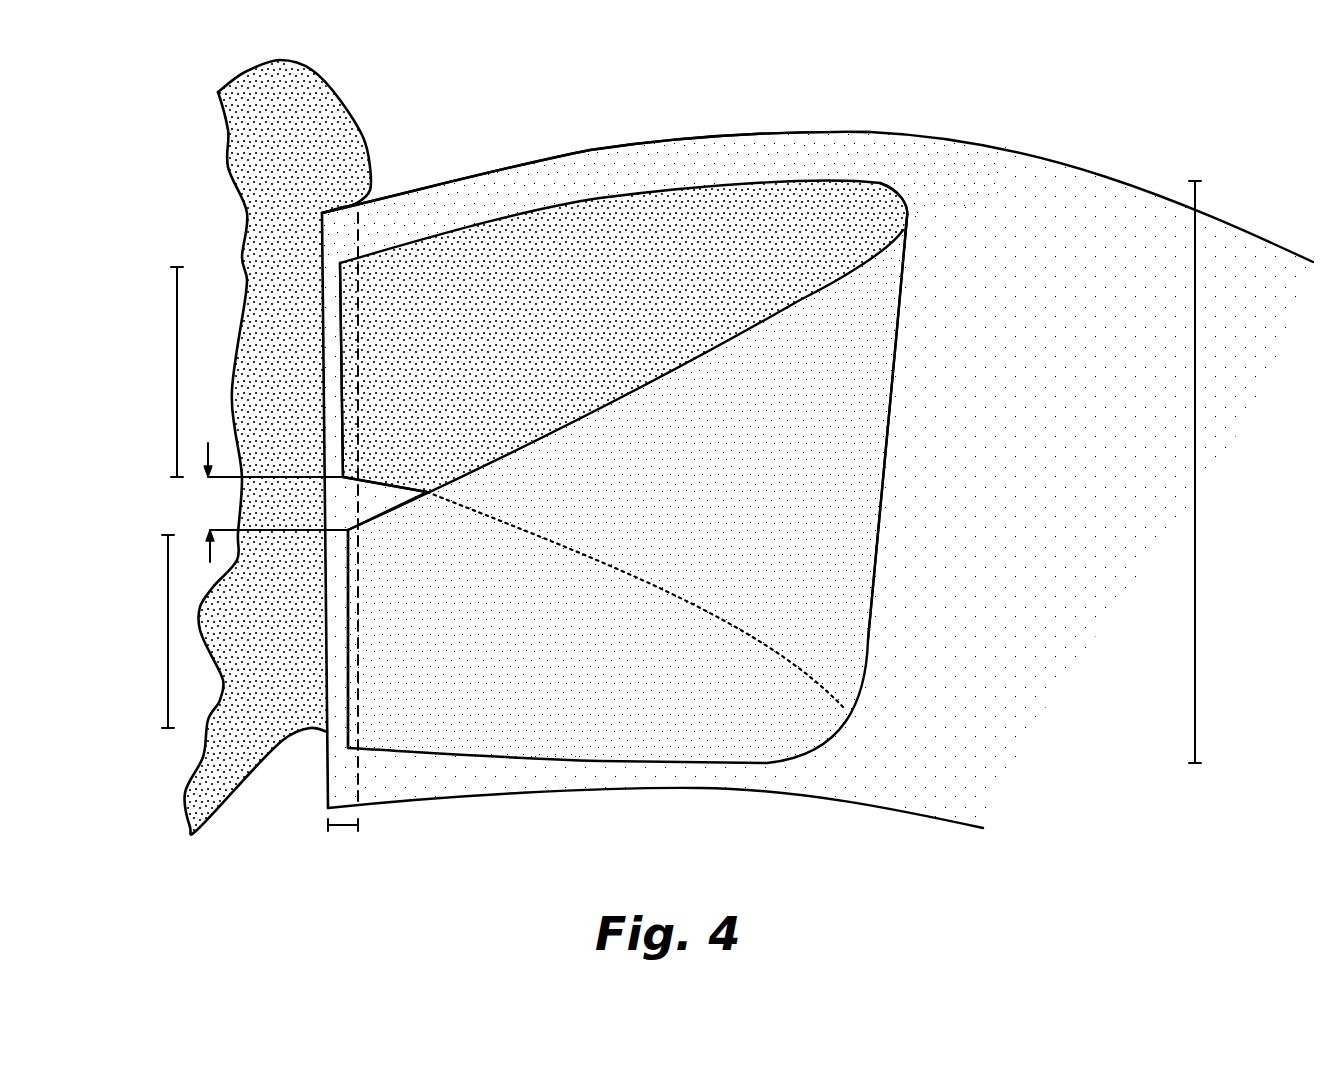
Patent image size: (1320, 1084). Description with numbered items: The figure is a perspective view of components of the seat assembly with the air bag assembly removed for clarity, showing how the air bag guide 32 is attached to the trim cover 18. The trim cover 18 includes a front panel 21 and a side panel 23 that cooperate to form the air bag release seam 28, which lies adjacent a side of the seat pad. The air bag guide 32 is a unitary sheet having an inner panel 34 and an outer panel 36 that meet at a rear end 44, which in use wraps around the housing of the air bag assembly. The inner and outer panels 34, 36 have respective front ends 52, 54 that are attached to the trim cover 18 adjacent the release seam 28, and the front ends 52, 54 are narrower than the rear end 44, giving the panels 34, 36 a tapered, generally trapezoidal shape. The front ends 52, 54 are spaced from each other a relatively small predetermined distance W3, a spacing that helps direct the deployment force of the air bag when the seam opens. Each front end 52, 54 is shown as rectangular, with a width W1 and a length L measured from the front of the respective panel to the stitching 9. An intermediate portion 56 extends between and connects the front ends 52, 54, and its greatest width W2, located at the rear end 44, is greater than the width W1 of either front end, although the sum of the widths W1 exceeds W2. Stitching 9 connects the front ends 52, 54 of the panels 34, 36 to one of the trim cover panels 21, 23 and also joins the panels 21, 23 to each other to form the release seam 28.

The trim cover 18 is at (821, 128).
The front panel 21 is at (573, 163).
The side panel 23 is at (333, 110).
The air bag release seam 28 is at (380, 176).
The air bag guide 32 is at (880, 468).
The inner panel 34 is at (628, 317).
The outer panel 36 is at (683, 551).
The rear end 44 is at (887, 398).
The intermediate portion 56 is at (880, 320).
The stitching 9 is at (357, 285).
The front end of inner panel 52 is at (347, 352).
The front end of outer panel 54 is at (358, 664).
The width of front ends W1 is at (176, 318).
The greatest width of intermediate portion W2 is at (1195, 462).
The spacing between front ends W3 is at (268, 490).
The length of front ends L is at (350, 827).